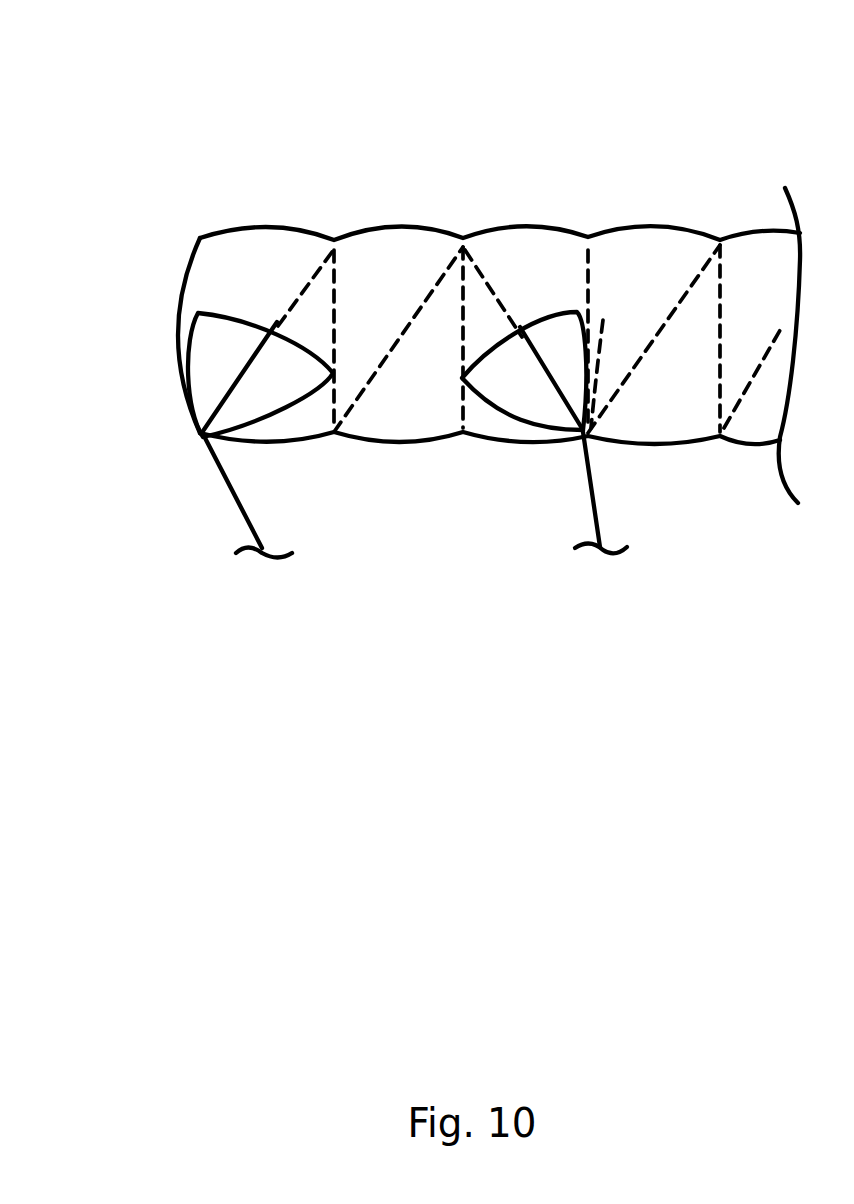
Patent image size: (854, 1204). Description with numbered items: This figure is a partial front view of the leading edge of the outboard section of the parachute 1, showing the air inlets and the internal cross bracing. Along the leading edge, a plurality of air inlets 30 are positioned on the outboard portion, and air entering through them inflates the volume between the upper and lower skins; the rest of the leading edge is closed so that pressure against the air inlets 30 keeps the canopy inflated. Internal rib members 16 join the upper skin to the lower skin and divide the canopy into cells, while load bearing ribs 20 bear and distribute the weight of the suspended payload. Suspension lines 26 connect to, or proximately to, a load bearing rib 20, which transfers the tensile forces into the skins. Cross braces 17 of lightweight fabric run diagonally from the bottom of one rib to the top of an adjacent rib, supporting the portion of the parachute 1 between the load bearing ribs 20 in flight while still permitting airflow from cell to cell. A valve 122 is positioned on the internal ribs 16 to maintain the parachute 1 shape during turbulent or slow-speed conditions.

The parachute 1 is at (338, 208).
The load bearing rib 20 is at (196, 266).
The rib member 16 is at (460, 296).
The cross brace 17 is at (236, 378).
The valve 122 is at (597, 318).
The air inlet 30 is at (283, 402).
The suspension line 26 is at (217, 483).